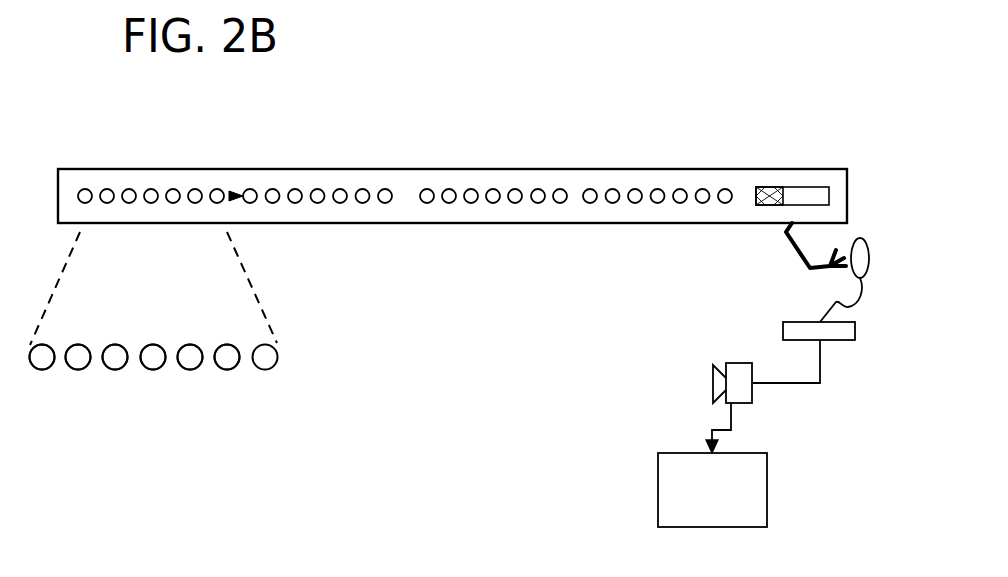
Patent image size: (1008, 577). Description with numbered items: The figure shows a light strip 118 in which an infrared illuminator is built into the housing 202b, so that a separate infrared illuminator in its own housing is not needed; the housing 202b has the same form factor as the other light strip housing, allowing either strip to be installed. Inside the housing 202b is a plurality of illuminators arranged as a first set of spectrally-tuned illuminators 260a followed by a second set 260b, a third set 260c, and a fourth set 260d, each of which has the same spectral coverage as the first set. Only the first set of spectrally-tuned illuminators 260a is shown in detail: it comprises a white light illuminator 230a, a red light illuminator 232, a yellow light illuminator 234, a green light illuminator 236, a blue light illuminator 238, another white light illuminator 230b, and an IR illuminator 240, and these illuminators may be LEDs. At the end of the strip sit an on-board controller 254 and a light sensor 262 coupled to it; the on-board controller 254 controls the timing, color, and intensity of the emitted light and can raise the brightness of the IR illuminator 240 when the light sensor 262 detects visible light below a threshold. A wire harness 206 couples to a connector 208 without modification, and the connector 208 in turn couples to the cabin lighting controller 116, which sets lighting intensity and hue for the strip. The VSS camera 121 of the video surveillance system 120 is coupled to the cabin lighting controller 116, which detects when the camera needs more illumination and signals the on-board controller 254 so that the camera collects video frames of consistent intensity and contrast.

The light strip 118 is at (675, 115).
The housing 202b is at (308, 169).
The first set of spectrally-tuned illuminators 260a is at (228, 160).
The second set of spectrally-tuned illuminators 260b is at (393, 234).
The third set of spectrally-tuned illuminators 260c is at (565, 234).
The fourth set of spectrally-tuned illuminators 260d is at (735, 234).
The on-board controller 254 is at (809, 187).
The light sensor 262 is at (770, 187).
The wire harness 206 is at (783, 240).
The connector 208 is at (858, 238).
The cabin lighting controller 116 is at (853, 340).
The VSS camera 121 is at (737, 362).
The video surveillance system 120 is at (766, 520).
The IR illuminator 240 is at (268, 370).
The white light illuminator 230a is at (38, 370).
The red light illuminator 232 is at (78, 345).
The yellow light illuminator 234 is at (113, 370).
The green light illuminator 236 is at (150, 345).
The blue light illuminator 238 is at (188, 370).
The white light illuminator 230b is at (225, 370).